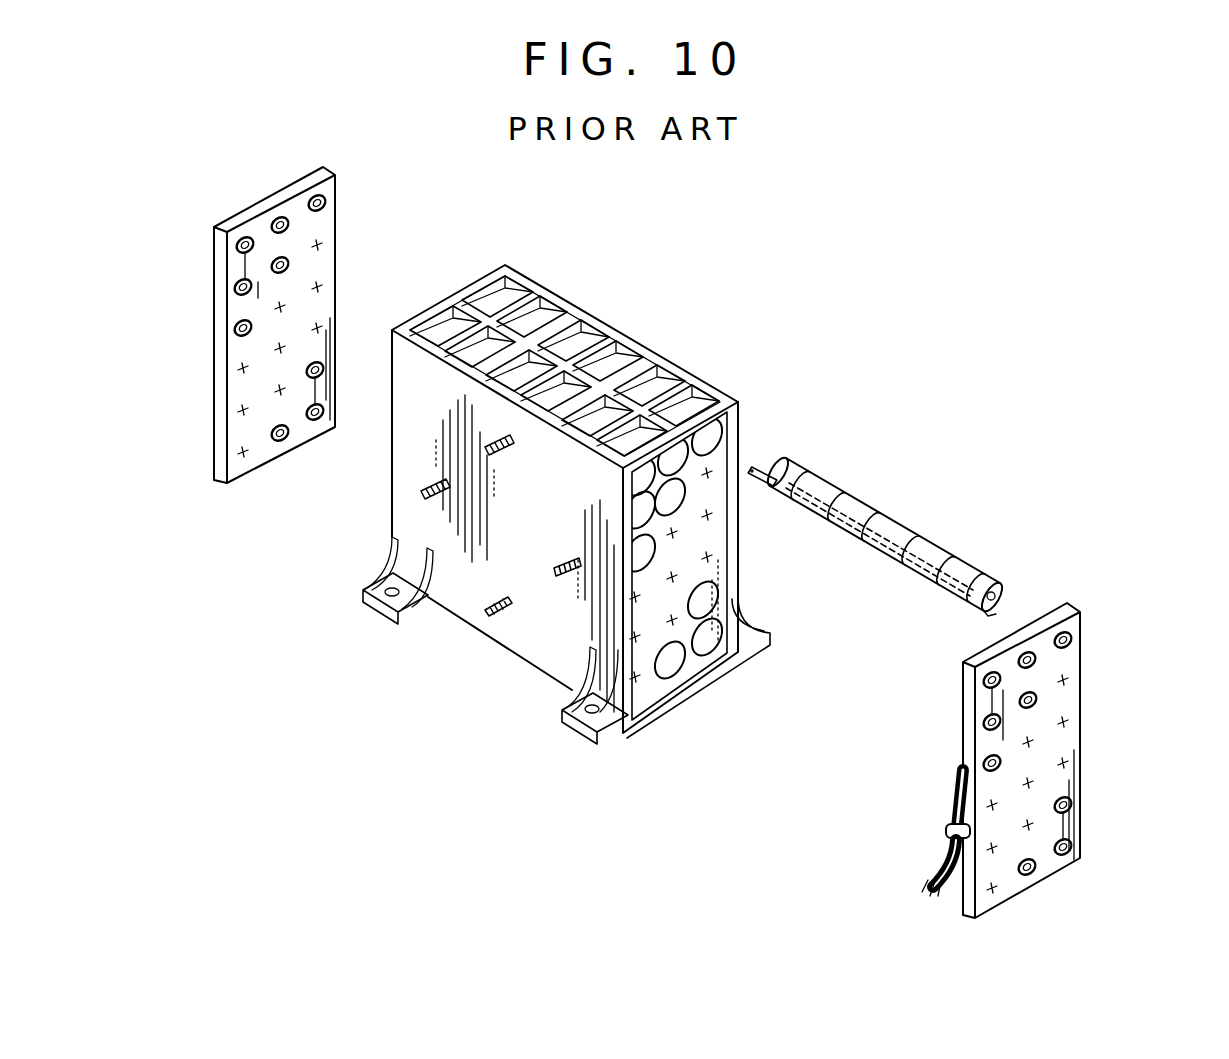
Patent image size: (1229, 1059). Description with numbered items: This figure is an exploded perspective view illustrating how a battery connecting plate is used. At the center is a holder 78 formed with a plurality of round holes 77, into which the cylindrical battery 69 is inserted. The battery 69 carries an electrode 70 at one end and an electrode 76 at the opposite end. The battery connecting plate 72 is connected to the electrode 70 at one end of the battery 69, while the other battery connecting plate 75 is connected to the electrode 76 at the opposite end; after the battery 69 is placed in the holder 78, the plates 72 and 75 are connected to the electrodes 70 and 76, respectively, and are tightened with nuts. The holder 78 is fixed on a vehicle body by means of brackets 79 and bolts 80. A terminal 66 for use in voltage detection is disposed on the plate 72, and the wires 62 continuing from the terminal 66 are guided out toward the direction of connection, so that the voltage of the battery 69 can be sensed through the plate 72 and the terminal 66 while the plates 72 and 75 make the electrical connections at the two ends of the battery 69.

The wires 62 is at (938, 868).
The terminal 66 is at (1035, 668).
The cylindrical battery 69 is at (903, 533).
The electrode 70 is at (1005, 602).
The battery connecting plate 72 is at (1083, 745).
The battery connecting plate 75 is at (336, 230).
The electrode 76 is at (770, 467).
The round holes 77 is at (705, 598).
The holder 78 is at (600, 322).
The brackets 79 is at (573, 728).
The bolts 80 is at (487, 617).